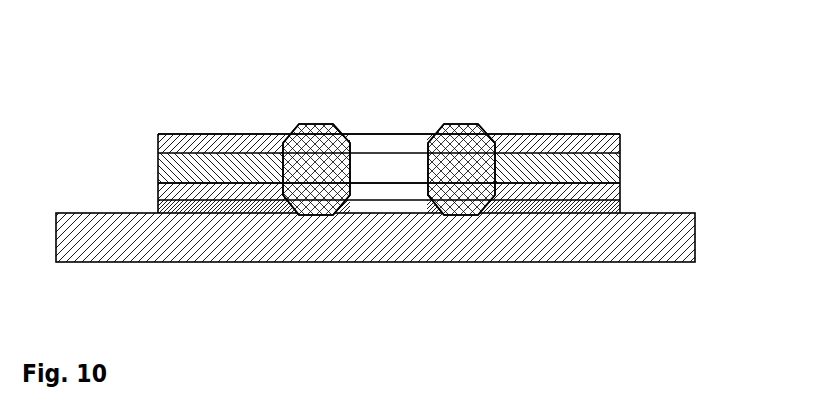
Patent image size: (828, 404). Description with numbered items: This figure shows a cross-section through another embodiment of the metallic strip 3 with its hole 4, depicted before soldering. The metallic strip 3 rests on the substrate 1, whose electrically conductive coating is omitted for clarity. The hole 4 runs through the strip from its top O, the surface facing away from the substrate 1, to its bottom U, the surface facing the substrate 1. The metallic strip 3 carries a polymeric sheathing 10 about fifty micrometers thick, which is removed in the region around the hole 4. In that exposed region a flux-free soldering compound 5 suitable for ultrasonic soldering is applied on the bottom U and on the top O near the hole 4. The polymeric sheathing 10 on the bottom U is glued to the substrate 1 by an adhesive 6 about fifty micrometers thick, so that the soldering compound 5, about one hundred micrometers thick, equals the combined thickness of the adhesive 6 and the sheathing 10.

The substrate 1 is at (372, 240).
The metallic strip 3 is at (619, 173).
The hole 4 is at (393, 167).
The soldering compound 5 is at (313, 140).
The adhesive 6 is at (620, 208).
The polymeric sheathing 10 is at (182, 142).
The top O is at (240, 133).
The bottom U is at (233, 183).